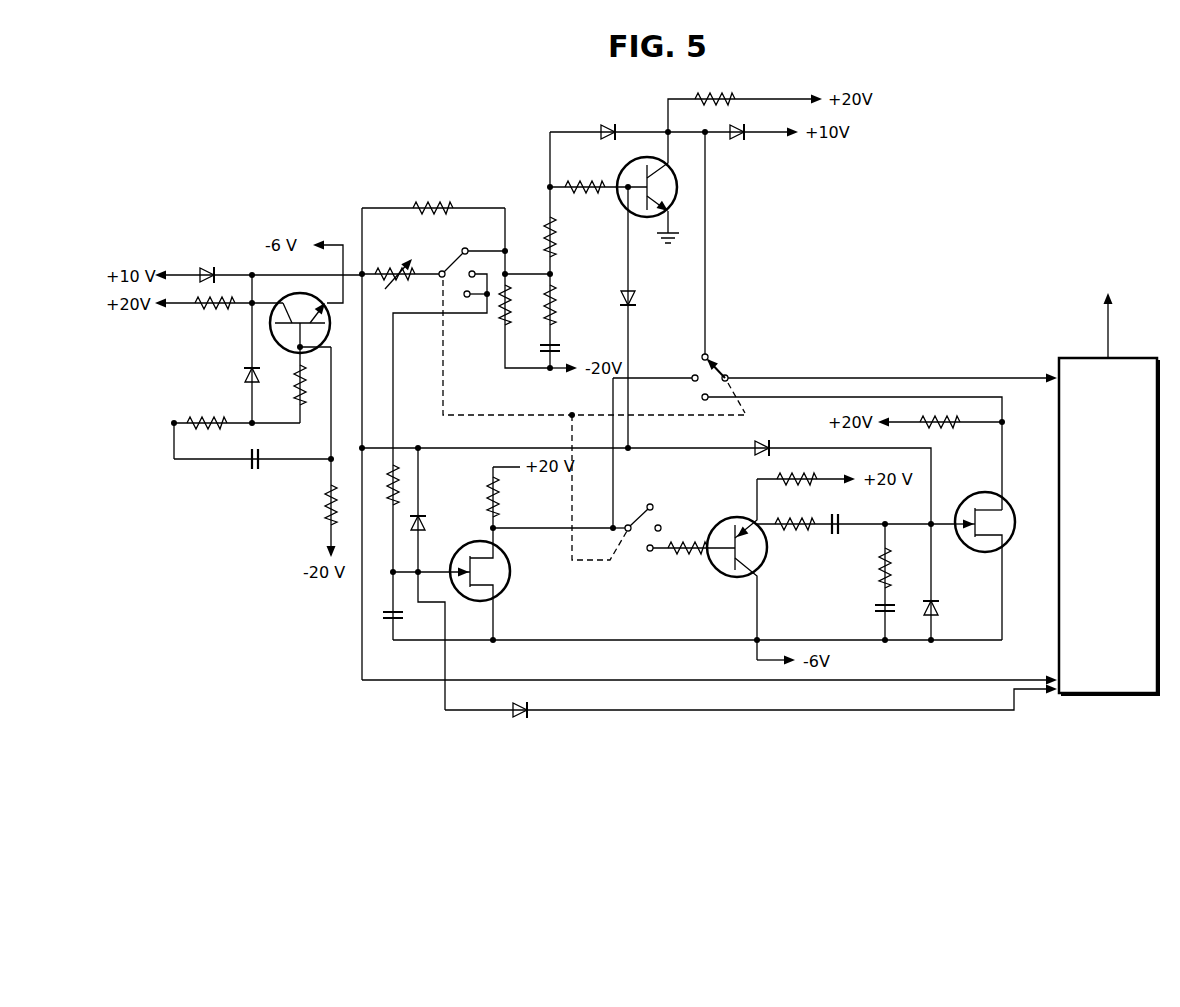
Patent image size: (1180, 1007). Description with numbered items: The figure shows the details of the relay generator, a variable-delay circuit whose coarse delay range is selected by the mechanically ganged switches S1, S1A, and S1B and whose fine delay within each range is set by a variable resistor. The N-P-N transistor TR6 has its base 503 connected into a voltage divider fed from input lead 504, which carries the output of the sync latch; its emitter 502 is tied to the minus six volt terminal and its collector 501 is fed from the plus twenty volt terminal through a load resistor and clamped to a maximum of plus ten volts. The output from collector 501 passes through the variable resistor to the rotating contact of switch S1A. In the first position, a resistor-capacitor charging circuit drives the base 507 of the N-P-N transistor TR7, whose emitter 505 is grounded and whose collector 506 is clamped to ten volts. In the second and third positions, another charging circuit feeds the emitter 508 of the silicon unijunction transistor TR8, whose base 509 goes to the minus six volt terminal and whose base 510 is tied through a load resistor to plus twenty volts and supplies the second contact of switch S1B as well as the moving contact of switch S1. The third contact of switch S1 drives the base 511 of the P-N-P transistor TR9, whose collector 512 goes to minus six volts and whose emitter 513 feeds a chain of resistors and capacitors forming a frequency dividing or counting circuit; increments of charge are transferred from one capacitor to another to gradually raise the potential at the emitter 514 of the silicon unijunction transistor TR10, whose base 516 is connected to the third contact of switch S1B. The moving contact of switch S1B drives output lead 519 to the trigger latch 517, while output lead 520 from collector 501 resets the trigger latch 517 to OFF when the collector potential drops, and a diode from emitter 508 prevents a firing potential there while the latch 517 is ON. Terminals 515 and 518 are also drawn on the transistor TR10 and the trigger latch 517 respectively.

The collector 501 is at (289, 303).
The emitter 502 is at (318, 313).
The base 503 is at (297, 340).
The input lead 504 is at (173, 423).
The emitter 505 is at (662, 228).
The collector 506 is at (658, 160).
The base 507 is at (628, 190).
The emitter 508 is at (433, 571).
The base 509 is at (493, 630).
The base 510 is at (490, 527).
The base 511 is at (720, 556).
The collector 512 is at (748, 572).
The emitter 513 is at (748, 527).
The emitter 514 is at (944, 518).
The source of transistor TR10 515 is at (1002, 562).
The base 516 is at (1002, 477).
The trigger latch 517 is at (1090, 360).
The trigger latch output 518 is at (1108, 331).
The output lead 519 is at (990, 377).
The output lead 520 is at (1037, 675).
The transistor TR6 is at (325, 306).
The transistor TR7 is at (647, 187).
The transistor TR8 is at (503, 580).
The transistor TR9 is at (740, 569).
The transistor TR10 is at (992, 554).
The switch S1 is at (639, 526).
The switch S1A is at (449, 436).
The switch S1B is at (807, 424).